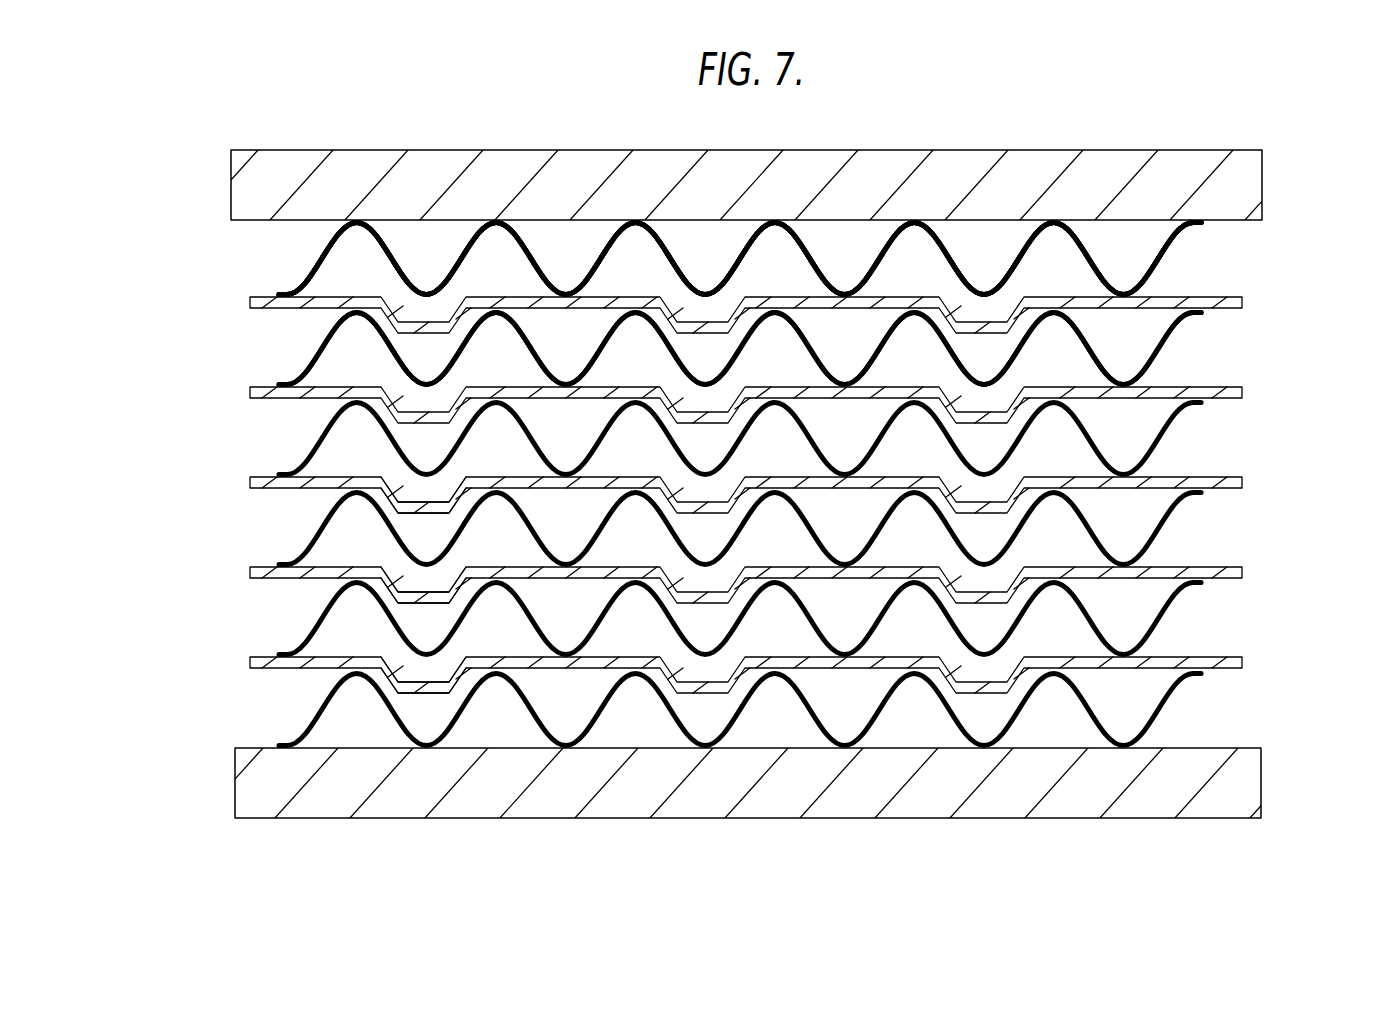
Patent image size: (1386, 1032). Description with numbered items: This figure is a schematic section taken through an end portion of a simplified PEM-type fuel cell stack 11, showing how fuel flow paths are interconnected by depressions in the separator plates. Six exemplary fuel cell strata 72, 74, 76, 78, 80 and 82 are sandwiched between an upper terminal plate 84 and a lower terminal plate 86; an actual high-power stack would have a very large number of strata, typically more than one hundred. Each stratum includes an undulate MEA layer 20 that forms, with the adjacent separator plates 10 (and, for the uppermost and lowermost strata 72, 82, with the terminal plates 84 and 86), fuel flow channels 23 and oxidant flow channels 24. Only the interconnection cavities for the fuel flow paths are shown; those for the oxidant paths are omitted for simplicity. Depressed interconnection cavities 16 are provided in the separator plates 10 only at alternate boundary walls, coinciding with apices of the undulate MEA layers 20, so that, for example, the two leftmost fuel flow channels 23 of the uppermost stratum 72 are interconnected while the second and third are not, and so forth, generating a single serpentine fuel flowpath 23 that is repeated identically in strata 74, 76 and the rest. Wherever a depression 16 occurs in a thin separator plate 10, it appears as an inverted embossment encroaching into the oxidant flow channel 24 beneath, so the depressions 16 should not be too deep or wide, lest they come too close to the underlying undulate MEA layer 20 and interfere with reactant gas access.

The separator plate 10 is at (262, 394).
The fuel cell stack 11 is at (765, 459).
The depression 16 is at (427, 493).
The undulate MEA layer 20 is at (312, 278).
The fuel flow channel 23 is at (333, 266).
The oxidant flow channel 24 is at (727, 233).
The fuel cell stratum 72 is at (1232, 251).
The fuel cell stratum 74 is at (1232, 341).
The fuel cell stratum 76 is at (1232, 429).
The fuel cell stratum 78 is at (1234, 518).
The fuel cell stratum 80 is at (1232, 610).
The fuel cell stratum 82 is at (1238, 696).
The terminal plate 84 is at (1040, 165).
The terminal plate 86 is at (1226, 780).